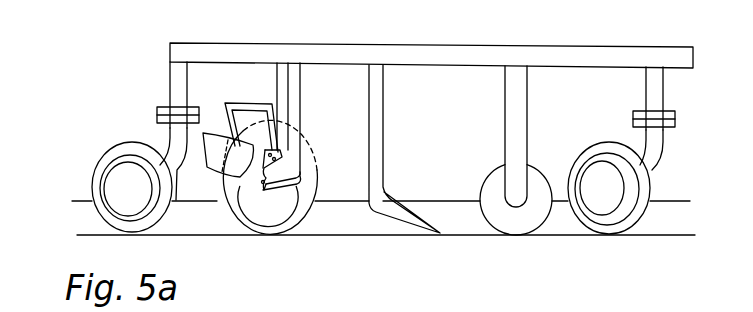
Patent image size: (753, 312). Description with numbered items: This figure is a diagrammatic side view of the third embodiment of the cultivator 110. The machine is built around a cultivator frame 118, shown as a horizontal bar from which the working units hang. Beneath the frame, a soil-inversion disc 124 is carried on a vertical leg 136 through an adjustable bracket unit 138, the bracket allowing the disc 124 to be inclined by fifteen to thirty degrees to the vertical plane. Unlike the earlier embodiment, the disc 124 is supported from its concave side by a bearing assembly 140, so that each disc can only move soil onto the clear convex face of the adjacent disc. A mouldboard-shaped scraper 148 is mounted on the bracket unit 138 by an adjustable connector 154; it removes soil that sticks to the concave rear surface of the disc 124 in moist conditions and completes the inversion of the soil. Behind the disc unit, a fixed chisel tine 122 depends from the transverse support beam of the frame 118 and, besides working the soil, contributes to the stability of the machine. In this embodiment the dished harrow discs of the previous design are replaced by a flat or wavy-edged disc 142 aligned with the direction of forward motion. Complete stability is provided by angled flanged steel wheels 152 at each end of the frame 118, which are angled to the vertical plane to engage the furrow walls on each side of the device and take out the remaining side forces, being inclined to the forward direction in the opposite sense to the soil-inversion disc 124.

The cultivator 110 is at (706, 93).
The cultivator frame 118 is at (431, 48).
The chisel tine 122 is at (415, 213).
The soil-inversion disc 124 is at (312, 216).
The vertical leg 136 is at (301, 108).
The adjustable bracket unit 138 is at (283, 173).
The bearing assembly 140 is at (246, 222).
The flat or wavy-edged disc 142 is at (546, 162).
The mouldboard-shaped scraper 148 is at (217, 165).
The angled flanged steel wheel 152 is at (122, 143).
The adjustable connector 154 is at (247, 80).